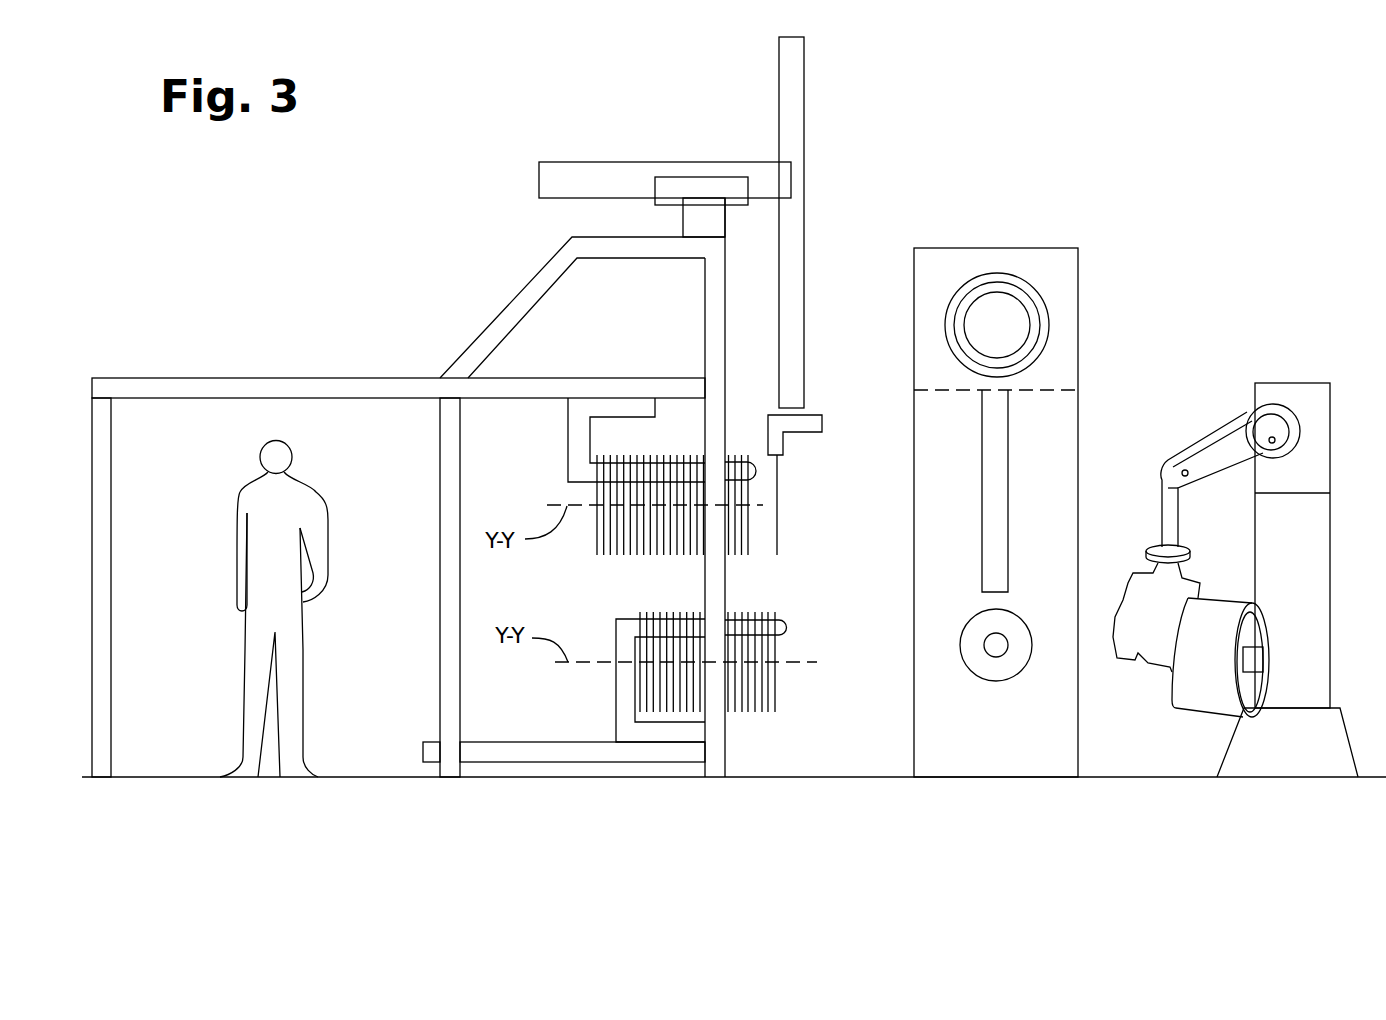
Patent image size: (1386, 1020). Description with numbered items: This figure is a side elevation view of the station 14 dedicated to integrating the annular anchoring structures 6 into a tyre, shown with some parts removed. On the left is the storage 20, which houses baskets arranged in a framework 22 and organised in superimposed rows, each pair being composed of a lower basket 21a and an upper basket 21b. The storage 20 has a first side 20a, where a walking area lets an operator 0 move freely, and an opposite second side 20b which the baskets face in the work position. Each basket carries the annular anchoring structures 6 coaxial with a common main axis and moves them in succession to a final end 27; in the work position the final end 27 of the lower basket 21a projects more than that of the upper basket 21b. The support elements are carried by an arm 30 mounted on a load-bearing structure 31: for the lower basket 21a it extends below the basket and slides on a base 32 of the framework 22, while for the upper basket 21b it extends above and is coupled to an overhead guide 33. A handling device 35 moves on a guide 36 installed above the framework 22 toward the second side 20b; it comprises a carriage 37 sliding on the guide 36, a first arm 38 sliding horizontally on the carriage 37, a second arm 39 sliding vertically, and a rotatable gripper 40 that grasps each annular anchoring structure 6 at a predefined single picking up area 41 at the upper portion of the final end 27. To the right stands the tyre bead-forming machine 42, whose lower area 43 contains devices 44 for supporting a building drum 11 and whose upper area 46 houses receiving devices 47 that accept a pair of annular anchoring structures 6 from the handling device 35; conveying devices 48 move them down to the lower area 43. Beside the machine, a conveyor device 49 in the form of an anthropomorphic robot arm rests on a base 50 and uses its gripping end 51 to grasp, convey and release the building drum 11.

The operator 0 is at (225, 683).
The annular anchoring structure 6 is at (777, 516).
The building drum 11 is at (1007, 683).
The station 14 is at (1162, 128).
The storage 20 is at (443, 790).
The first side 20a is at (373, 340).
The second side 20b is at (785, 702).
The lower basket 21a is at (737, 730).
The upper basket 21b is at (587, 548).
The framework 22 is at (483, 325).
The final end 27 is at (748, 536).
The arm 30 is at (683, 465).
The load-bearing structure 31 is at (567, 455).
The base 32 is at (508, 752).
The overhead guide 33 is at (545, 388).
The handling device 35 is at (690, 113).
The guide 36 is at (693, 220).
The carriage 37 is at (673, 190).
The first arm 38 is at (552, 178).
The second arm 39 is at (793, 225).
The gripper 40 is at (777, 443).
The predefined single picking up area 41 is at (741, 443).
The tyre bead-forming machine 42 is at (1088, 420).
The lower area 43 is at (1033, 675).
The devices for supporting a building drum 44 is at (996, 645).
The upper area 46 is at (1080, 285).
The receiving devices 47 is at (1018, 287).
The conveying devices 48 is at (997, 481).
The conveyor device 49 is at (1292, 372).
The base 50 is at (1285, 752).
The gripping end 51 is at (1155, 635).